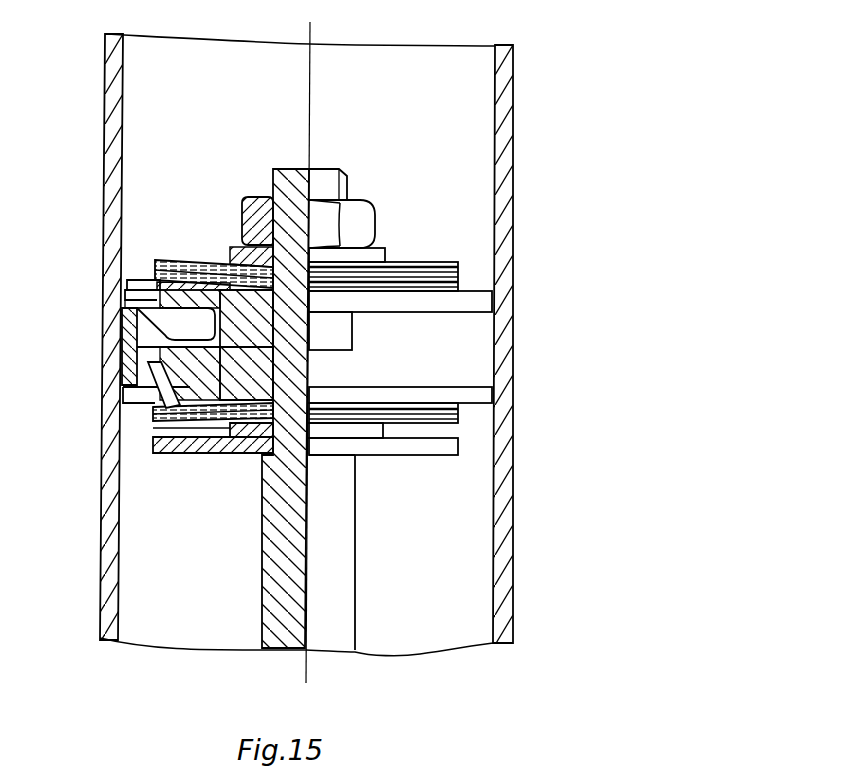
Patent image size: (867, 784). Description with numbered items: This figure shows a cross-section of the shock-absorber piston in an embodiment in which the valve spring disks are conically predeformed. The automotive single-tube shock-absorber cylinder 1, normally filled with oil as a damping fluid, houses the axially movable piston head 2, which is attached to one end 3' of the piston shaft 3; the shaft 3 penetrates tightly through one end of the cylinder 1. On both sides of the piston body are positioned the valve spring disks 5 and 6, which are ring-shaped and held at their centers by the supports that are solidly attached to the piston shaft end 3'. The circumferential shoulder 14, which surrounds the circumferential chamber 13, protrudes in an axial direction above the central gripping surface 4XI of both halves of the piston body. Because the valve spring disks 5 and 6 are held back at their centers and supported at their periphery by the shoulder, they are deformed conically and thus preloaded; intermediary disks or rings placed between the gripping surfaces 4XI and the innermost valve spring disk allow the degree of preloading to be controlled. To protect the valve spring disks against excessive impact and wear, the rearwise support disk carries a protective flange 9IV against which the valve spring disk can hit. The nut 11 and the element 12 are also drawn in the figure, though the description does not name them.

The shock-absorber cylinder 1 is at (503, 157).
The piston head 2 is at (470, 270).
The piston shaft 3 is at (447, 552).
The end of piston shaft 3' is at (430, 408).
The nut 11 is at (365, 225).
The valve spring disk 5 is at (155, 263).
The circumferential shoulder 14 is at (146, 283).
The circumferential chamber 13 is at (150, 298).
The central gripping surface 4XI is at (170, 397).
The slanted spring element 12 is at (193, 397).
The valve spring disk 6 is at (150, 431).
The protective flange 9IV is at (185, 448).